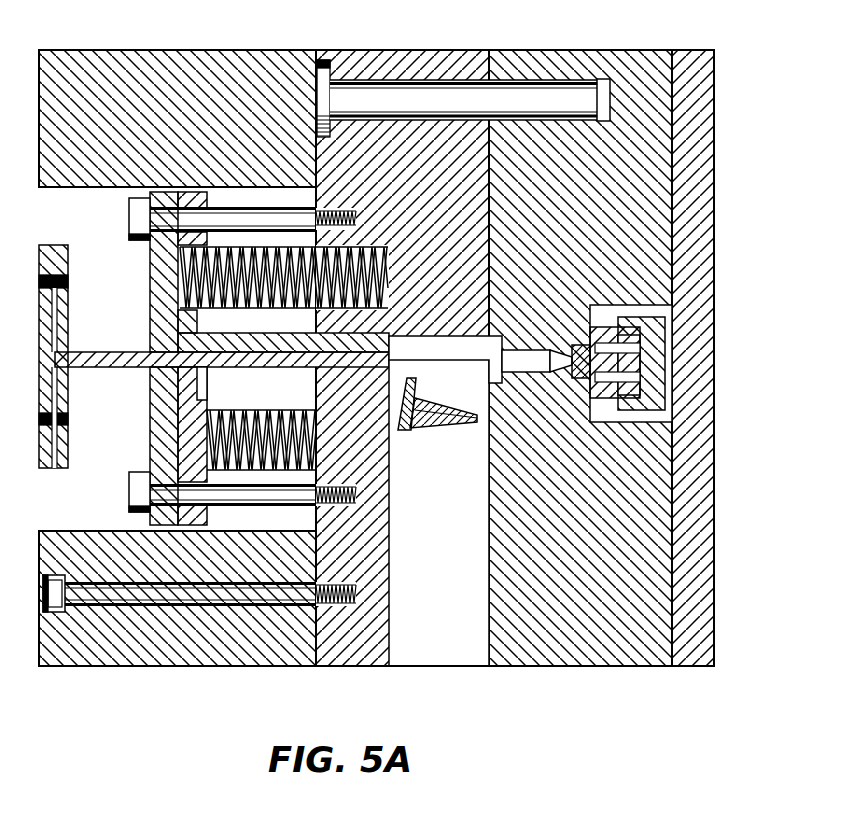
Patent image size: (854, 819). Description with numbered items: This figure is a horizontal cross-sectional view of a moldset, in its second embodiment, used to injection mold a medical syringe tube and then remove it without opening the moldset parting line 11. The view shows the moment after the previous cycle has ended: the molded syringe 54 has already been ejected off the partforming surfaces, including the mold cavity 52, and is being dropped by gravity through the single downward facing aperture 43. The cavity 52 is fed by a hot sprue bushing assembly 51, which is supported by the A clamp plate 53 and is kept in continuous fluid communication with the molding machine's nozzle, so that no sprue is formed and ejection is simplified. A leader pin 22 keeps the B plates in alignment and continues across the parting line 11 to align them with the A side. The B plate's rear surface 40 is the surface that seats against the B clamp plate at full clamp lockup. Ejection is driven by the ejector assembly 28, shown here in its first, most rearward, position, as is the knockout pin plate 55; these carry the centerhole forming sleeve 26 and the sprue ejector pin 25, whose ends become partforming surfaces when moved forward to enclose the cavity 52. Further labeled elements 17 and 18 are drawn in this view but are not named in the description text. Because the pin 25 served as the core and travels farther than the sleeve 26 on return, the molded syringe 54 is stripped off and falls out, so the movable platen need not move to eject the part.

The parting line 11 is at (486, 80).
The upper spring assembly 17 is at (177, 293).
The lower bolt 18 is at (143, 479).
The leader pin 22 is at (370, 84).
The sprue ejector pin 25 is at (127, 354).
The centerhole forming sleeve 26 is at (193, 377).
The ejector assembly 28 is at (64, 489).
The B plate's rear surface 40 is at (58, 246).
The downward facing aperture 43 is at (440, 650).
The hot sprue bushing assembly 51 is at (660, 345).
The mold cavity 52 is at (516, 361).
The A clamp plate 53 is at (698, 172).
The molded syringe 54 is at (437, 430).
The knockout pin plate 55 is at (166, 318).